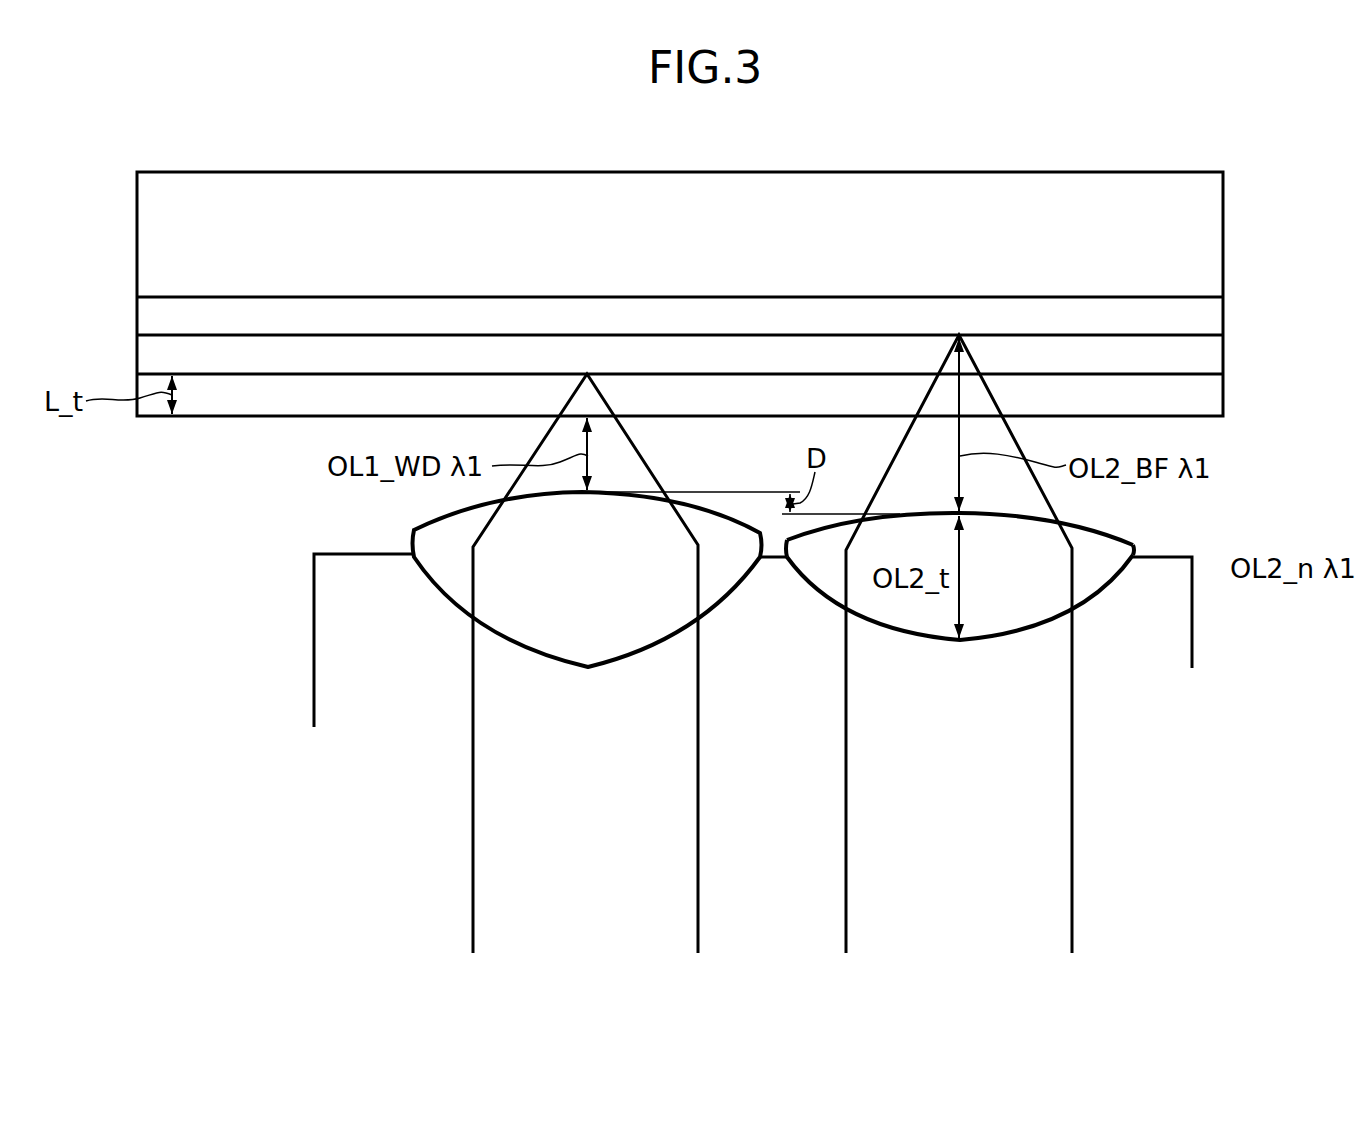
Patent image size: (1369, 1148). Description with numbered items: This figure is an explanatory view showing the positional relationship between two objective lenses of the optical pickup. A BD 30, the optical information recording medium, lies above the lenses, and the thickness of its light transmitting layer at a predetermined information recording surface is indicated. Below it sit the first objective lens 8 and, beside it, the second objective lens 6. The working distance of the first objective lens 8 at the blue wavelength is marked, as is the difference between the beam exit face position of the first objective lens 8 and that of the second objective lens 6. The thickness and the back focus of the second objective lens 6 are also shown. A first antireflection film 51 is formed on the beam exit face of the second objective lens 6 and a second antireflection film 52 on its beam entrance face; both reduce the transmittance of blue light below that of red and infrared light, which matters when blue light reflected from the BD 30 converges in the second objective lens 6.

The BD 30 is at (137, 210).
The first objective lens 8 is at (418, 519).
The first antireflection film 51 is at (1114, 531).
The second antireflection film 52 is at (1105, 600).
The second objective lens 6 is at (1134, 545).